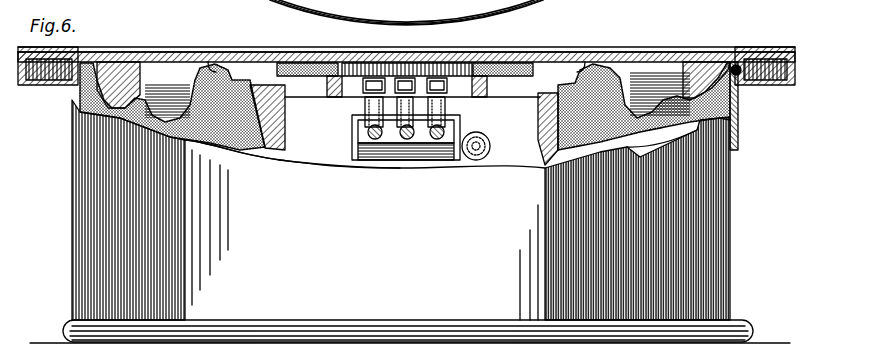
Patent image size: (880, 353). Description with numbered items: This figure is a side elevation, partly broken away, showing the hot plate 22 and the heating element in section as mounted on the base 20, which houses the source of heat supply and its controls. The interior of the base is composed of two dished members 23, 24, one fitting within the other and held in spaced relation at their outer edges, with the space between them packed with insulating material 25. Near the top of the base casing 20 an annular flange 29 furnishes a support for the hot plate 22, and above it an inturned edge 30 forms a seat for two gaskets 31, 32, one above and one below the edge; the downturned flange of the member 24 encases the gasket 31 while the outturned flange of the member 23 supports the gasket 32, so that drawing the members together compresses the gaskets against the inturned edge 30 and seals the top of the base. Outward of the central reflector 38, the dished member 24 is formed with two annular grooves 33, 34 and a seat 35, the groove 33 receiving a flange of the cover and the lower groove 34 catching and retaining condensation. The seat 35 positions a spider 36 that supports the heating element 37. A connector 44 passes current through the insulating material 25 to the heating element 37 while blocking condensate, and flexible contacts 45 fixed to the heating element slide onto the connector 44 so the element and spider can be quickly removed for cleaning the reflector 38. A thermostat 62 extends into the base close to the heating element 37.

The base 20 is at (732, 193).
The hot plate 22 is at (680, 62).
The dished member 23 is at (117, 123).
The dished member 24 is at (288, 160).
The insulating material 25 is at (230, 147).
The annular flange 29 is at (76, 100).
The inturned edge 30 is at (738, 76).
The gasket 31 is at (738, 57).
The gasket 32 is at (83, 80).
The annular groove 33 is at (117, 88).
The annular groove 34 is at (163, 115).
The seat 35 is at (218, 70).
The spider 36 is at (265, 77).
The heating element 37 is at (550, 60).
The reflector 38 is at (365, 146).
The connector 44 is at (357, 147).
The flexible contacts 45 is at (437, 138).
The thermostat 62 is at (491, 147).